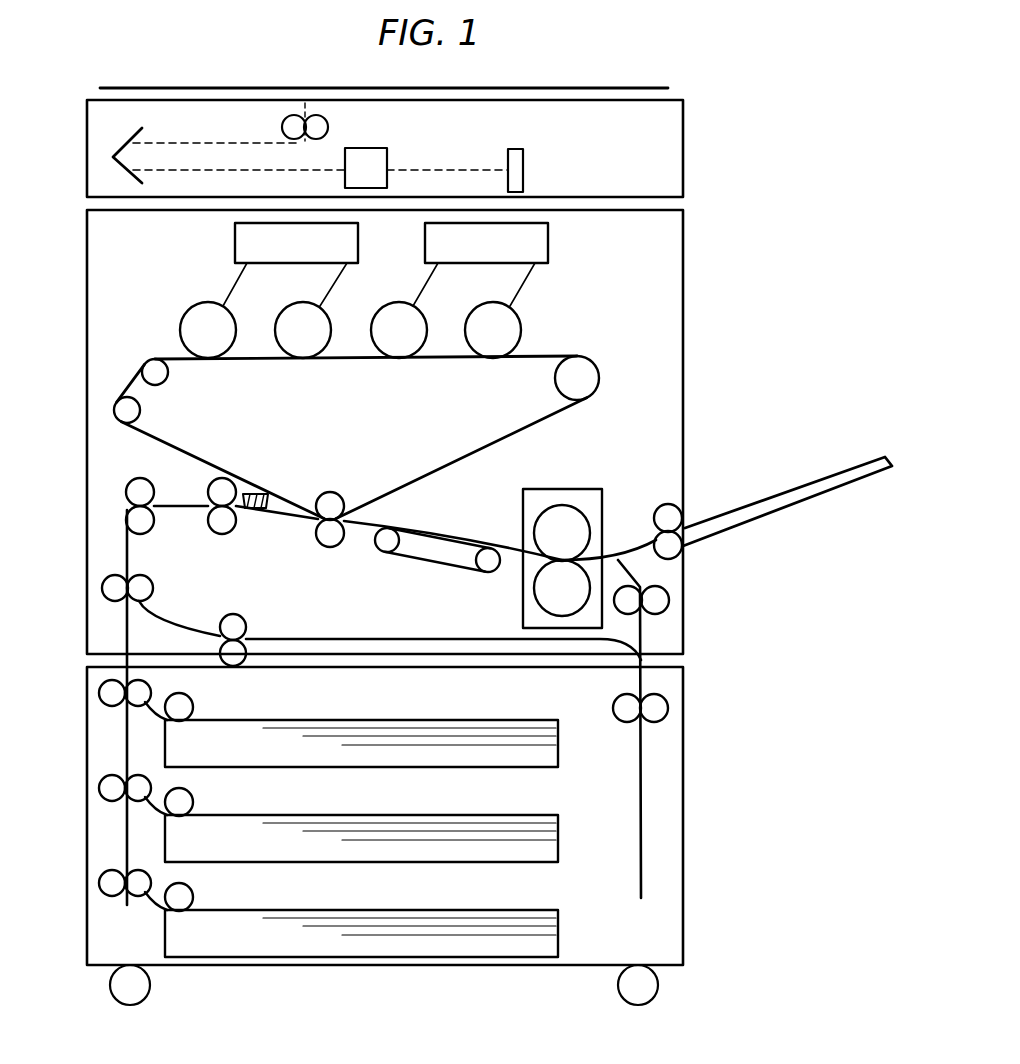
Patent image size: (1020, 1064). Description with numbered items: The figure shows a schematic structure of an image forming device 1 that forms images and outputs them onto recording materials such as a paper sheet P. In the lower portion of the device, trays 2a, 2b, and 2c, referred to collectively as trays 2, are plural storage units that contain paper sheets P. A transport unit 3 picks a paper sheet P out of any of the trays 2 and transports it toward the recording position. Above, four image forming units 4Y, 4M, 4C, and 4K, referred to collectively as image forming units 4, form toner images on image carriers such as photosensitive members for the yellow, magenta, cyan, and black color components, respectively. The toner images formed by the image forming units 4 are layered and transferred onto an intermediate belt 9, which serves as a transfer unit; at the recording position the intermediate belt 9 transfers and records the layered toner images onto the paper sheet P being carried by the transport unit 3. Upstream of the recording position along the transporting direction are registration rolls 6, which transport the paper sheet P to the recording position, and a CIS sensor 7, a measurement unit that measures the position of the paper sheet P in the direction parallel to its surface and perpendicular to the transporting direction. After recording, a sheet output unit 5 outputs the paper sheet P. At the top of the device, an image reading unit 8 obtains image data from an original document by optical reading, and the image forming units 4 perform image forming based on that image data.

The image forming device 1 is at (697, 91).
The trays 2 is at (442, 855).
The tray 2a is at (559, 750).
The tray 2b is at (559, 840).
The tray 2c is at (387, 950).
The transport unit 3 is at (75, 478).
The image forming units 4 is at (347, 290).
The image forming unit 4Y is at (193, 343).
The image forming unit 4M is at (287, 343).
The image forming unit 4C is at (384, 343).
The image forming unit 4K is at (478, 343).
The sheet output unit 5 is at (692, 515).
The registration rolls 6 is at (220, 526).
The CIS sensor 7 is at (252, 509).
The image reading unit 8 is at (177, 88).
The intermediate belt 9 is at (130, 378).
The paper sheet P is at (496, 937).